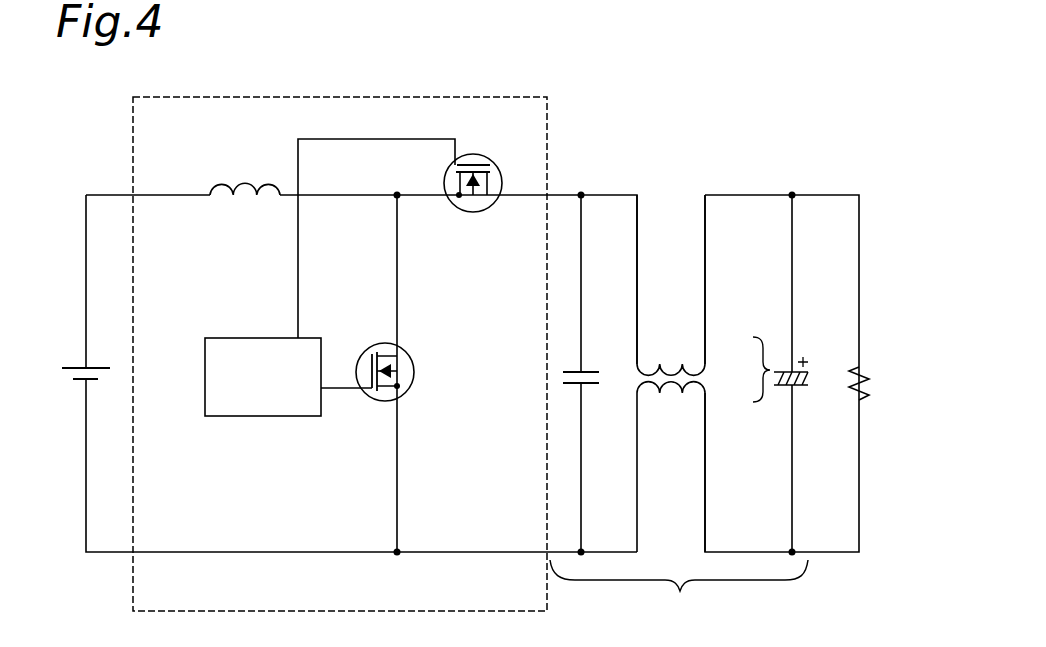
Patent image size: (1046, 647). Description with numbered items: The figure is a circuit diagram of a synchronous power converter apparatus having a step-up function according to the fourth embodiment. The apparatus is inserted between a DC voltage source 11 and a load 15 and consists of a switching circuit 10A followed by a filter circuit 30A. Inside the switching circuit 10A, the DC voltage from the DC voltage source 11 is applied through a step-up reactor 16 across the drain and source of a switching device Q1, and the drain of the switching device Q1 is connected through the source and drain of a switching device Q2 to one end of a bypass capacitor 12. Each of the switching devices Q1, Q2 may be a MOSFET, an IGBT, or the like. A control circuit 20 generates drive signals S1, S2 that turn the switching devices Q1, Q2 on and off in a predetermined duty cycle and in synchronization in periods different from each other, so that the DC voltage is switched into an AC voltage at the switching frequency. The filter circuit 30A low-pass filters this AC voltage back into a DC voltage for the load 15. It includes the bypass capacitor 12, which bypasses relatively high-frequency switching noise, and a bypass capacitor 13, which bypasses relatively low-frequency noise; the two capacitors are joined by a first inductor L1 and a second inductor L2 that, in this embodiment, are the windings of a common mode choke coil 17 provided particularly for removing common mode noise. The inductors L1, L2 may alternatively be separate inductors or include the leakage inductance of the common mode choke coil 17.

The switching circuit 10A is at (301, 97).
The DC voltage source 11 is at (68, 368).
The bypass capacitor 12 is at (590, 371).
The bypass capacitor 13 is at (810, 358).
The load 15 is at (868, 366).
The step-up reactor 16 is at (238, 184).
The common mode choke coil 17 is at (770, 371).
The control circuit 20 is at (256, 338).
The filter circuit 30A is at (679, 411).
The switching device Q1 is at (400, 388).
The switching device Q2 is at (467, 212).
The drive signal S1 is at (338, 388).
The drive signal S2 is at (448, 162).
The first inductor L1 is at (674, 364).
The second inductor L2 is at (676, 404).